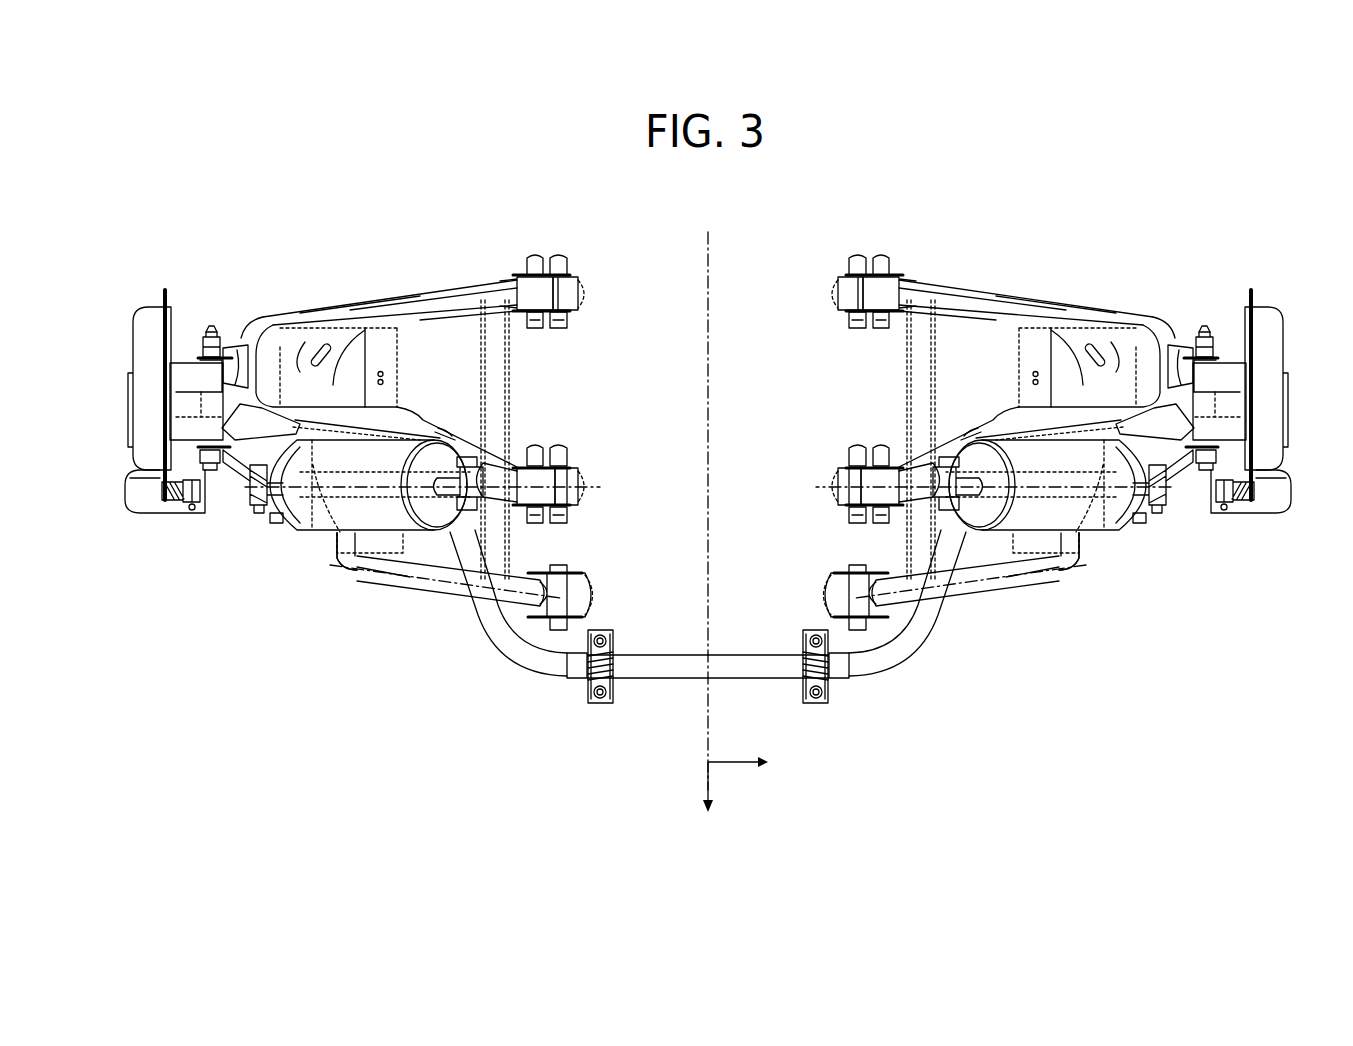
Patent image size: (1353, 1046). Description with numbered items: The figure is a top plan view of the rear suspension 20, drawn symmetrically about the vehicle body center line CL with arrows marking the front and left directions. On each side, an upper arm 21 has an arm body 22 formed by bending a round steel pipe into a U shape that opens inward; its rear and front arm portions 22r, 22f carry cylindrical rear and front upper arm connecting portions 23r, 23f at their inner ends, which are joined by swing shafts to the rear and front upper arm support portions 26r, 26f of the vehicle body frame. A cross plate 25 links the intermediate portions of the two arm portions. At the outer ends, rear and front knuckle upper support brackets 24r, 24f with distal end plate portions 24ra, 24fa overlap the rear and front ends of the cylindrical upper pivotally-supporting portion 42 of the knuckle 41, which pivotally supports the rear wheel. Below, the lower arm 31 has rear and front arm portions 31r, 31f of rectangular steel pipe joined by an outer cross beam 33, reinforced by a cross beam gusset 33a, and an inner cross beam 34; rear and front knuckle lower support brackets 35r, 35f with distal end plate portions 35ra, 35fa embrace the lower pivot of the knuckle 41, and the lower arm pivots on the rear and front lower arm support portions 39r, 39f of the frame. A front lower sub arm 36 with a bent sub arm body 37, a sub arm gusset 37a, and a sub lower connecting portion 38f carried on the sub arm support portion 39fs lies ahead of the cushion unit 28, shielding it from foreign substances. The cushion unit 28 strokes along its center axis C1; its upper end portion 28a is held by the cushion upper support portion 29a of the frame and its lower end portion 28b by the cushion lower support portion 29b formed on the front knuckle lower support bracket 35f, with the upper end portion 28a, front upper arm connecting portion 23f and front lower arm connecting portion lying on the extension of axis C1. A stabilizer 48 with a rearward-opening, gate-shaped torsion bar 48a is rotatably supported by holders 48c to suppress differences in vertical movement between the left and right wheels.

The rear suspension 20 is at (915, 163).
The upper arm 21 is at (732, 309).
The arm body 22 is at (265, 314).
The rear arm portion 22r is at (360, 298).
The front arm portion 22f is at (405, 425).
The rear upper arm connecting portion 23r is at (530, 276).
The front upper arm connecting portion 23f is at (535, 500).
The rear knuckle upper support bracket 24r is at (725, 277).
The distal end plate portion 24ra is at (1203, 330).
The front knuckle upper support bracket 24f is at (747, 541).
The distal end plate portion 24fa is at (1193, 498).
The cross plate 25 is at (400, 347).
The rear upper arm support portion 26r is at (708, 251).
The front upper arm support portion 26f is at (708, 456).
The cushion unit 28 is at (370, 537).
The upper end portion 28a is at (455, 455).
The lower end portion 28b is at (258, 512).
The cushion upper support portion 29a is at (505, 468).
The cushion lower support portion 29b is at (245, 500).
The lower arm 31 is at (285, 309).
The rear arm portion 31r is at (350, 316).
The front arm portion 31f is at (340, 565).
The outer cross beam 33 is at (317, 333).
The cross beam gusset 33a is at (368, 328).
The inner cross beam 34 is at (497, 343).
The rear knuckle lower support bracket 35r is at (713, 266).
The distal end plate portion 35ra is at (1208, 330).
The front knuckle lower support bracket 35f is at (731, 533).
The distal end plate portion 35fa is at (1209, 500).
The front lower sub arm 36 is at (708, 629).
The sub arm body 37 is at (437, 580).
The sub arm gusset 37a is at (383, 548).
The sub lower connecting portion 38f is at (572, 600).
The rear lower arm support portion 39r is at (583, 292).
The front lower arm support portion 39f is at (585, 481).
The sub arm support portion 39fs is at (593, 582).
The knuckle 41 is at (713, 385).
The upper pivotally-supporting portion 42 is at (1224, 378).
The stabilizer 48 is at (709, 707).
The torsion bar 48a is at (657, 680).
The holder 48c is at (590, 684).
The center axis C1 is at (337, 484).
The center line CL is at (710, 243).